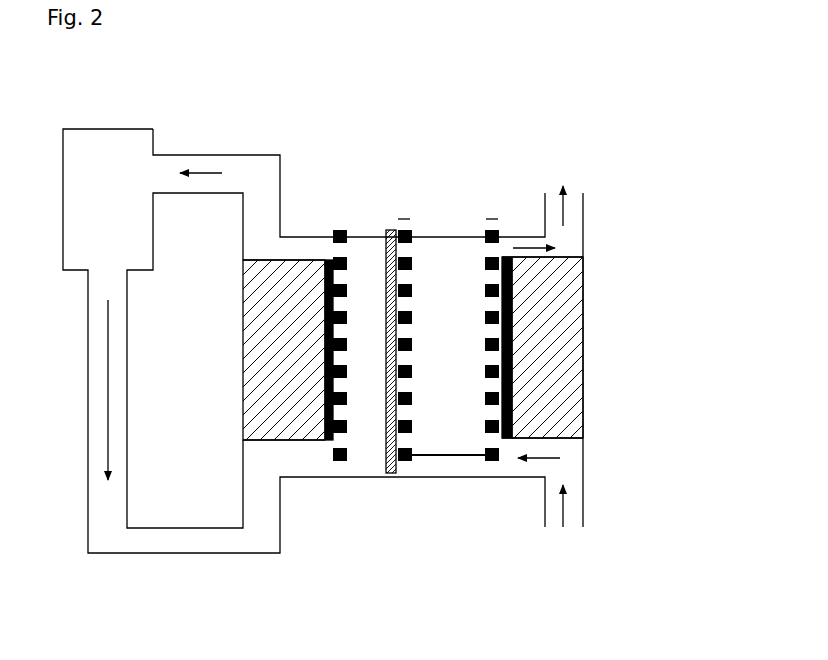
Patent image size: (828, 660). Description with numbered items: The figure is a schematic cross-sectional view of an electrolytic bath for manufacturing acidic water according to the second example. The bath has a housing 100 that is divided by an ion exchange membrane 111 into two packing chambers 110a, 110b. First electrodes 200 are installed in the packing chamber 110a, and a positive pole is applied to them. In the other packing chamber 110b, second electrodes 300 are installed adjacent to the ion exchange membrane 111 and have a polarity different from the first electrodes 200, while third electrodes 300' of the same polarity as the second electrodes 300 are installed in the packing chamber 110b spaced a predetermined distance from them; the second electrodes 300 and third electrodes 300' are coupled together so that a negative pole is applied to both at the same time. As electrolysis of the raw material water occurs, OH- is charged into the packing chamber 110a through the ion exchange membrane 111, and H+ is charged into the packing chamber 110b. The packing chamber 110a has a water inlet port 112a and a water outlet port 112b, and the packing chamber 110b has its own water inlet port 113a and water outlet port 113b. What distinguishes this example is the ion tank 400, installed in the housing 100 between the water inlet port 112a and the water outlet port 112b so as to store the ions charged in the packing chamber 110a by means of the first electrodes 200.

The ion tank 400 is at (103, 132).
The water outlet port 112b is at (263, 245).
The water inlet port 112a is at (260, 502).
The first electrodes 200 is at (340, 465).
The packing chamber 110a is at (378, 458).
The ion exchange membrane 111 is at (386, 231).
The second electrodes 300 is at (409, 314).
The third electrodes 300' is at (489, 309).
The packing chamber 110b is at (452, 462).
The housing 100 is at (584, 360).
The water outlet port 113b is at (576, 213).
The water inlet port 113a is at (576, 505).